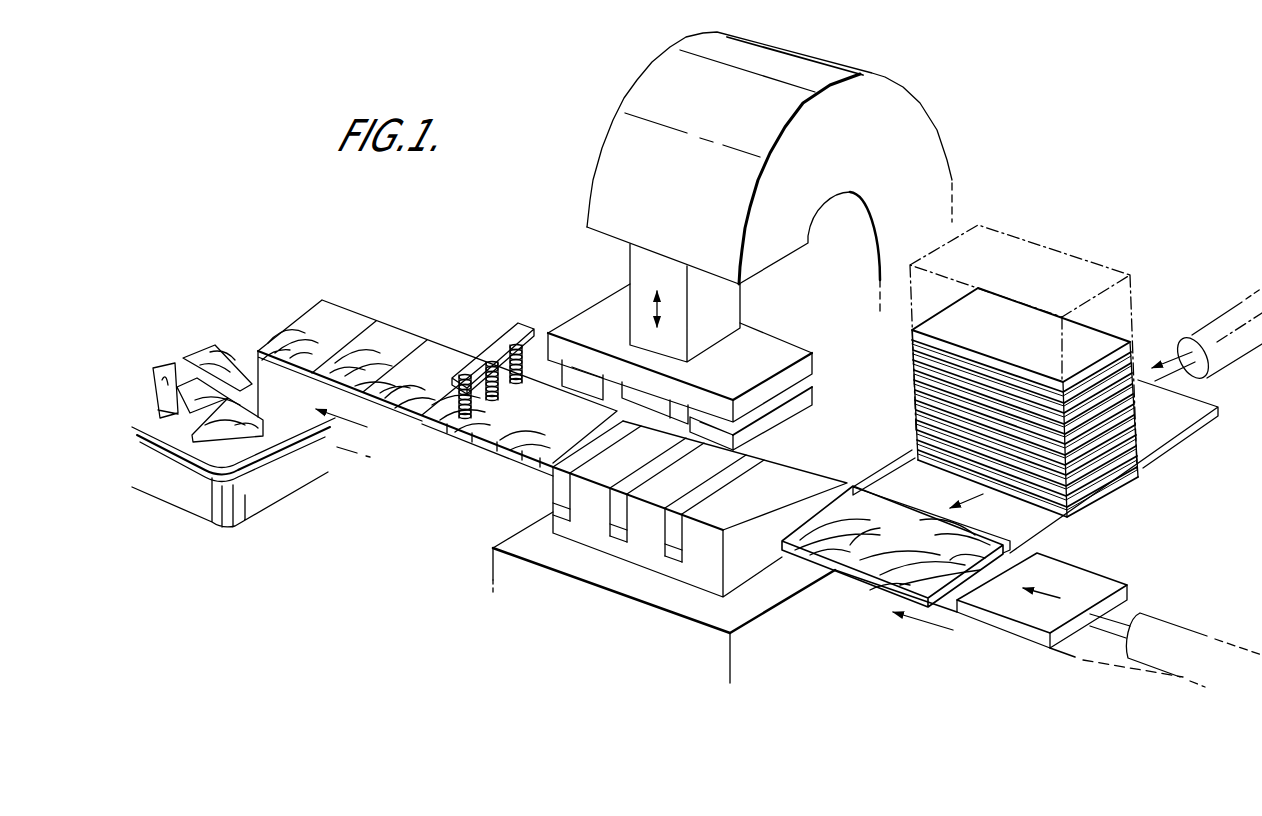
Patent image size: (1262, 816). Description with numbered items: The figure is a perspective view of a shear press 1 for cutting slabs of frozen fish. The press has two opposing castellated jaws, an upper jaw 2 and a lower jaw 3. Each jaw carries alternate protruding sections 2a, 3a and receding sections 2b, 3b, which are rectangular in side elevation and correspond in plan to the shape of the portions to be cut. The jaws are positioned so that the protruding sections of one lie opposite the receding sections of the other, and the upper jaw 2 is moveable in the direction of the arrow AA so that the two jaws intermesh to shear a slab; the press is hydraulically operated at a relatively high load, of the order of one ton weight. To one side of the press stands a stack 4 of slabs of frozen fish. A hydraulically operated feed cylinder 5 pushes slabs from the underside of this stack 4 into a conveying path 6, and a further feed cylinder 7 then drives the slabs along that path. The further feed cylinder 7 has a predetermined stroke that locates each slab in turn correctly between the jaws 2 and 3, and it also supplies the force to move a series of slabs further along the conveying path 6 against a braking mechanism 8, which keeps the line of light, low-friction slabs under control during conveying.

The shear press 1 is at (568, 300).
The upper jaw 2 is at (680, 367).
The protruding sections 2a is at (677, 405).
The receding sections 2b is at (580, 380).
The lower jaw 3 is at (665, 552).
The protruding sections 3a is at (571, 496).
The receding sections 3b is at (671, 553).
The stack 4 is at (1133, 345).
The feed cylinder 5 is at (1192, 336).
The conveying path 6 is at (922, 622).
The further feed cylinder 7 is at (1170, 632).
The braking mechanism 8 is at (499, 338).